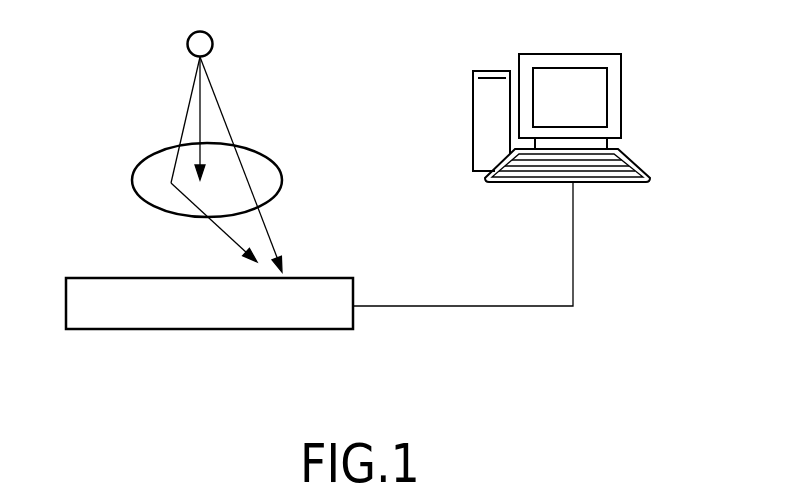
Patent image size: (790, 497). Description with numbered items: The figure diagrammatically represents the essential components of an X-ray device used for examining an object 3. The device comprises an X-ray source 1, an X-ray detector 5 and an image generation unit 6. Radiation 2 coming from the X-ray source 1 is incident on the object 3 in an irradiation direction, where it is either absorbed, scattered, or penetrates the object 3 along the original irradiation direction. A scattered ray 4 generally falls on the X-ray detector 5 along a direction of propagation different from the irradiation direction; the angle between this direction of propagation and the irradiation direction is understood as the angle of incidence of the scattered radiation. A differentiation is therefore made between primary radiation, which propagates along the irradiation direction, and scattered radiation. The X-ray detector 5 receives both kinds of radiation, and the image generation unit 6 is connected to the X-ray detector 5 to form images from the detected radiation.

The X-ray source 1 is at (198, 45).
The radiation 2 is at (188, 100).
The object 3 is at (155, 165).
The scattered ray 4 is at (222, 230).
The X-ray detector 5 is at (213, 320).
The image generation unit 6 is at (592, 100).